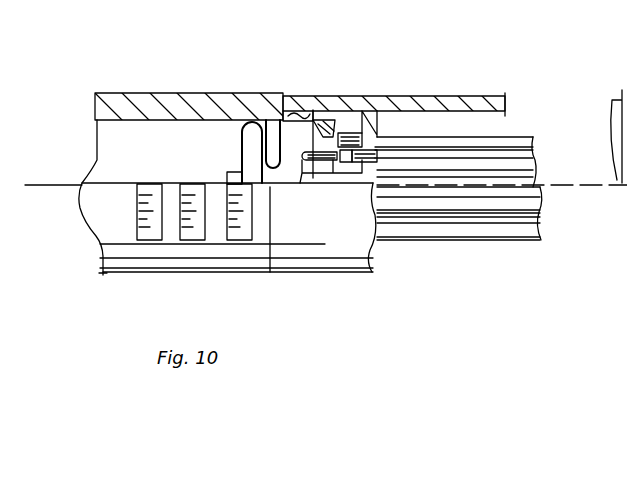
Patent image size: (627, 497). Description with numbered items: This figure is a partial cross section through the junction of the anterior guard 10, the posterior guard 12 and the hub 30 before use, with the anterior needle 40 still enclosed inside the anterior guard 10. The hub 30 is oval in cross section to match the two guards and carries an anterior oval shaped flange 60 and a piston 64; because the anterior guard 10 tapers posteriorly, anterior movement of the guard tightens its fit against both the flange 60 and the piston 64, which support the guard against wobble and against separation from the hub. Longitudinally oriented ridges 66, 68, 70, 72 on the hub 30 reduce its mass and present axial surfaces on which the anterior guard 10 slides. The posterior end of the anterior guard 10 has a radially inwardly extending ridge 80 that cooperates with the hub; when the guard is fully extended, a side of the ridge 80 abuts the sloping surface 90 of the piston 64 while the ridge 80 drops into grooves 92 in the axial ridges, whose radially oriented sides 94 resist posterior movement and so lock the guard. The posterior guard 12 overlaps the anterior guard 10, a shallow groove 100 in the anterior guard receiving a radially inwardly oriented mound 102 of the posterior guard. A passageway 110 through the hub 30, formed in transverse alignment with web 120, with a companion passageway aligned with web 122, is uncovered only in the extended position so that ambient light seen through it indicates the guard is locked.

The anterior guard 10 is at (158, 47).
The posterior guard 12 is at (472, 92).
The hub 30 is at (472, 250).
The anterior needle 40 is at (97, 163).
The anterior oval shaped flange 60 is at (241, 140).
The piston 64 is at (279, 128).
The longitudinally oriented ridge 66 is at (523, 143).
The longitudinally oriented ridge 68 is at (518, 169).
The longitudinally oriented ridge 70 is at (532, 209).
The longitudinally oriented ridge 72 is at (510, 236).
The radially inwardly extending ridge 80 is at (407, 103).
The sloping surface 90 is at (336, 116).
The grooves 92 is at (370, 119).
The sides of grooves 94 is at (342, 112).
The shallow groove 100 is at (316, 113).
The mound 102 is at (303, 112).
The passageway 110 is at (366, 155).
The web 120 is at (535, 177).
The web 122 is at (533, 222).